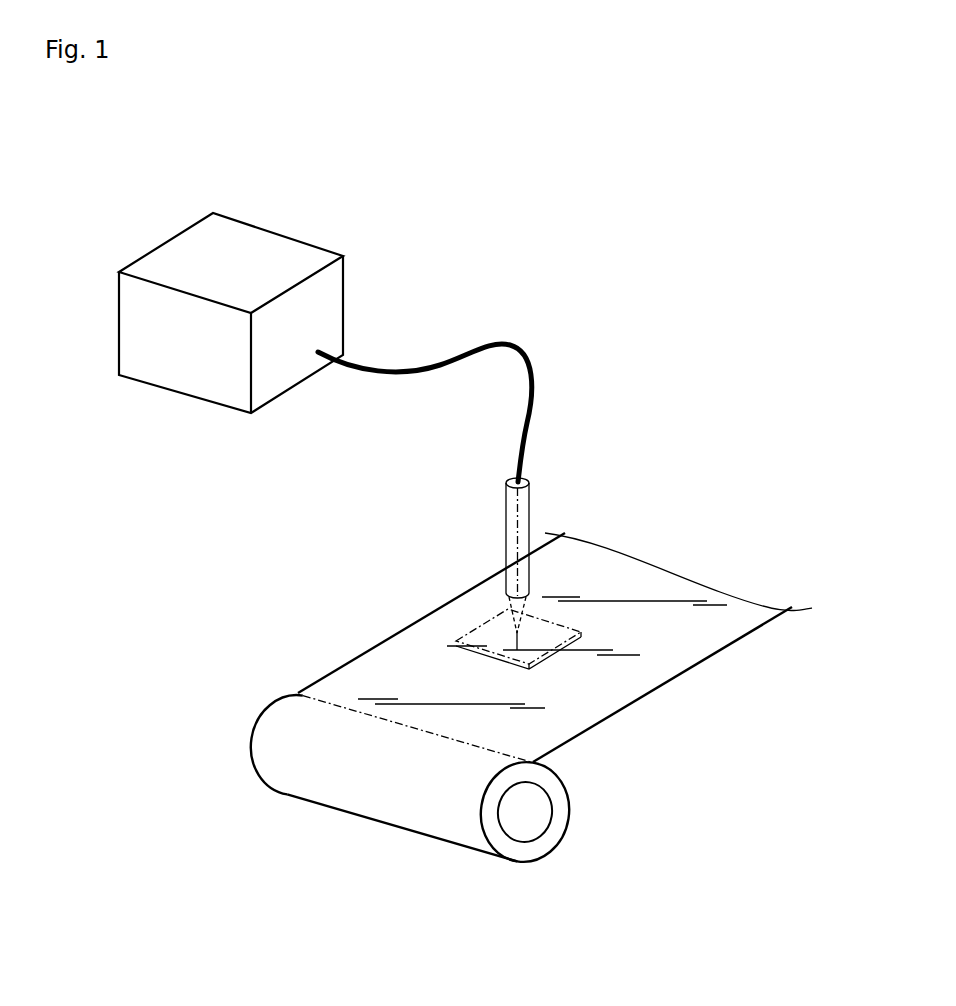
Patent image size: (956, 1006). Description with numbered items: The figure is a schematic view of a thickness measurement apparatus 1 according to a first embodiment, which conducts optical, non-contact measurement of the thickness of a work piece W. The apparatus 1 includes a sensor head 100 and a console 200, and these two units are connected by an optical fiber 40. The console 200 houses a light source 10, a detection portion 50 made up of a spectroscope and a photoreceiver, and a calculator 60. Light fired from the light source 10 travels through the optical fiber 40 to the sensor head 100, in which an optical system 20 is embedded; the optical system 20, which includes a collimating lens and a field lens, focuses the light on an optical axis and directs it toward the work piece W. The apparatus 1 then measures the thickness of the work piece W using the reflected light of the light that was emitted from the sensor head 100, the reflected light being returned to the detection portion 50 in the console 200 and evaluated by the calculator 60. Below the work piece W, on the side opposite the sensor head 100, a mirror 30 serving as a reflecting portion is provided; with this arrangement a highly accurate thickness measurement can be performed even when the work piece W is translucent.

The thickness measurement apparatus 1 is at (623, 250).
The console 200 is at (177, 270).
The light source 10 is at (235, 257).
The detection portion 50 is at (268, 268).
The calculator 60 is at (318, 295).
The optical fiber 40 is at (507, 345).
The sensor head 100 is at (532, 502).
The optical system 20 is at (513, 530).
The mirror 30 is at (493, 637).
The work piece W is at (675, 655).